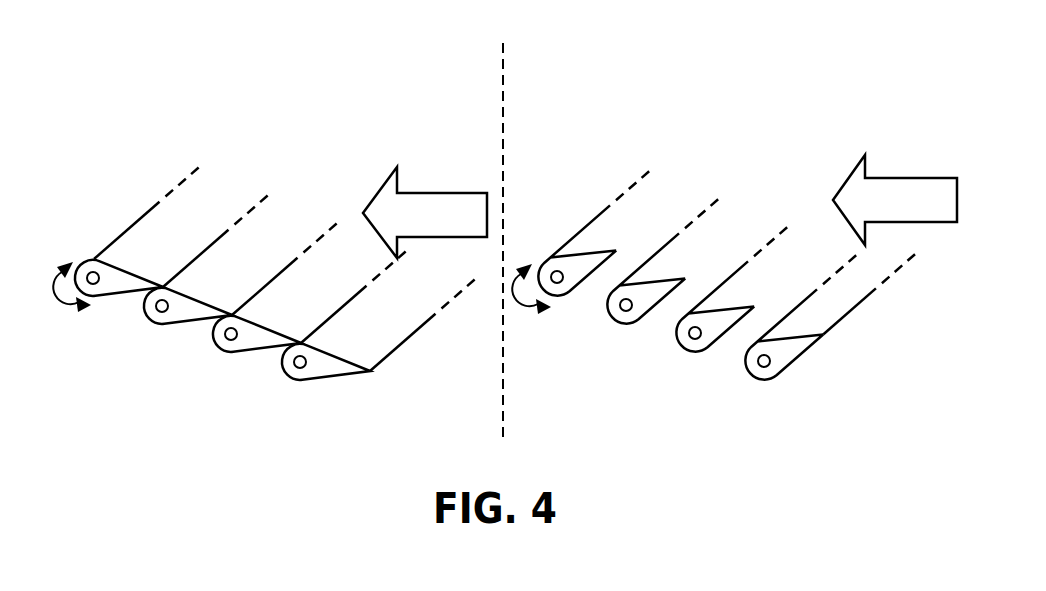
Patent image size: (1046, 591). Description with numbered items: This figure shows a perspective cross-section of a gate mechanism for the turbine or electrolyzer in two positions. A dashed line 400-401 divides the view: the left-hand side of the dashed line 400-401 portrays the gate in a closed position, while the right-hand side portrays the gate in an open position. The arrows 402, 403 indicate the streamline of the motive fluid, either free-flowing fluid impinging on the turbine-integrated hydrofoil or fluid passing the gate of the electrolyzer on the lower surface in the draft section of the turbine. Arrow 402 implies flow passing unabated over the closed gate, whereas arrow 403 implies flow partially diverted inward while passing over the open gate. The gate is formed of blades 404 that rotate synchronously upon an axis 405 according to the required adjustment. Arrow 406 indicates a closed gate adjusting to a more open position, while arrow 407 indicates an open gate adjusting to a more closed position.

The dashed line 400 is at (496, 314).
The dashed line 401 is at (519, 232).
The arrow 402 is at (447, 226).
The arrow 403 is at (920, 212).
The blades 404 is at (288, 380).
The axis 405 is at (220, 346).
The arrow 406 is at (84, 316).
The arrow 407 is at (525, 262).